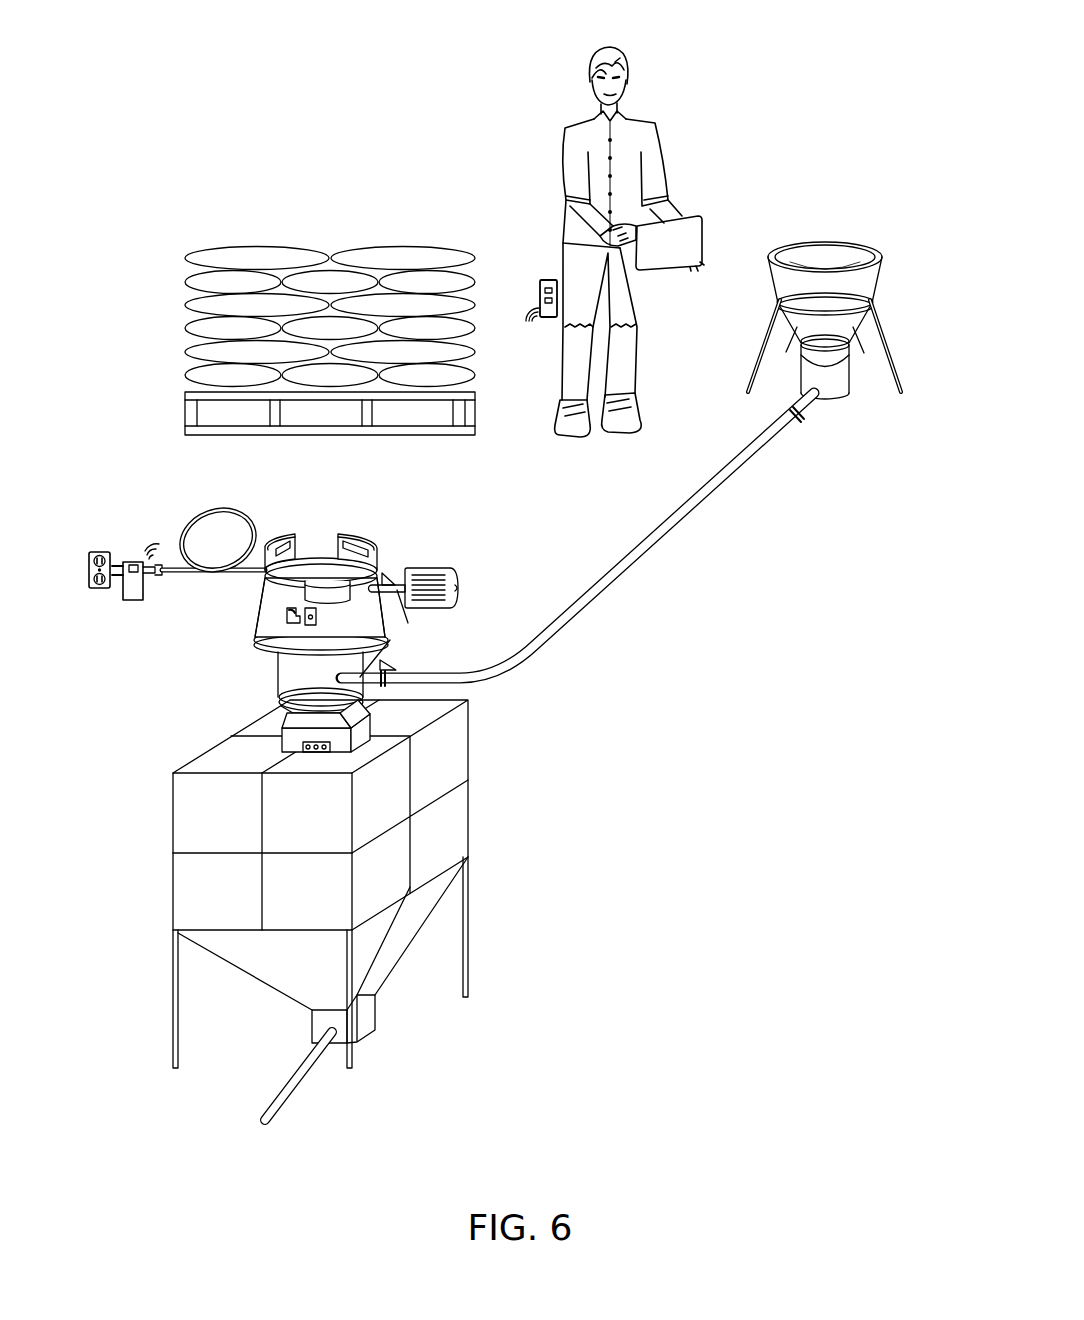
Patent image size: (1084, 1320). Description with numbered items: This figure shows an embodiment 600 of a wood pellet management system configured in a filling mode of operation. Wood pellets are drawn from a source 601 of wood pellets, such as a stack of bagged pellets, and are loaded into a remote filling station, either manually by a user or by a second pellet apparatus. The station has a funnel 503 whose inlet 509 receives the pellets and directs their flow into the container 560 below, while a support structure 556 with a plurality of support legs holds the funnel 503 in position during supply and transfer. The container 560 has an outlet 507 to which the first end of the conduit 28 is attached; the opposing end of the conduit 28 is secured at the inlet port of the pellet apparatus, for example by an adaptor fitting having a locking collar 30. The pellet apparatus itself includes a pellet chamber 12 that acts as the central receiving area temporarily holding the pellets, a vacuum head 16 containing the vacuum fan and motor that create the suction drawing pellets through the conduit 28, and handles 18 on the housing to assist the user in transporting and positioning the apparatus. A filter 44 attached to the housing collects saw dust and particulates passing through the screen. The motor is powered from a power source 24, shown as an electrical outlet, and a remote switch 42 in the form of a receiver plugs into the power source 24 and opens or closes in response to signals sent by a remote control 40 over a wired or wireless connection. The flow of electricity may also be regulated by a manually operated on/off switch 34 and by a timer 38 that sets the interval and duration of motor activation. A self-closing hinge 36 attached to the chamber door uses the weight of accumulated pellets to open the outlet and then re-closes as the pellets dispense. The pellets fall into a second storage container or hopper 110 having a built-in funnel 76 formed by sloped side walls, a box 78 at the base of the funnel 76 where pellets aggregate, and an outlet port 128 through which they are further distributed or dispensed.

The pellet management system embodiment 600 is at (327, 86).
The source of wood pellets 601 is at (273, 243).
The remote control 40 is at (545, 280).
The inlet 509 is at (840, 255).
The funnel 503 is at (821, 318).
The support structure 556 is at (788, 305).
The container 560 is at (830, 388).
The outlet 507 is at (817, 400).
The locking collar 30 is at (800, 418).
The conduit 28 is at (588, 539).
The vacuum head 16 is at (323, 557).
The handles 18 is at (357, 533).
The filter 44 is at (438, 570).
The power source 24 is at (102, 589).
The remote switch 42 is at (143, 586).
The on/off switch 34 is at (287, 618).
The timer 38 is at (317, 615).
The pellet chamber 12 is at (339, 595).
The self-closing hinge 36 is at (303, 743).
The container or hopper 110 is at (274, 915).
The funnel 76 is at (397, 928).
The box 78 is at (367, 1018).
The outlet port 128 is at (325, 1052).